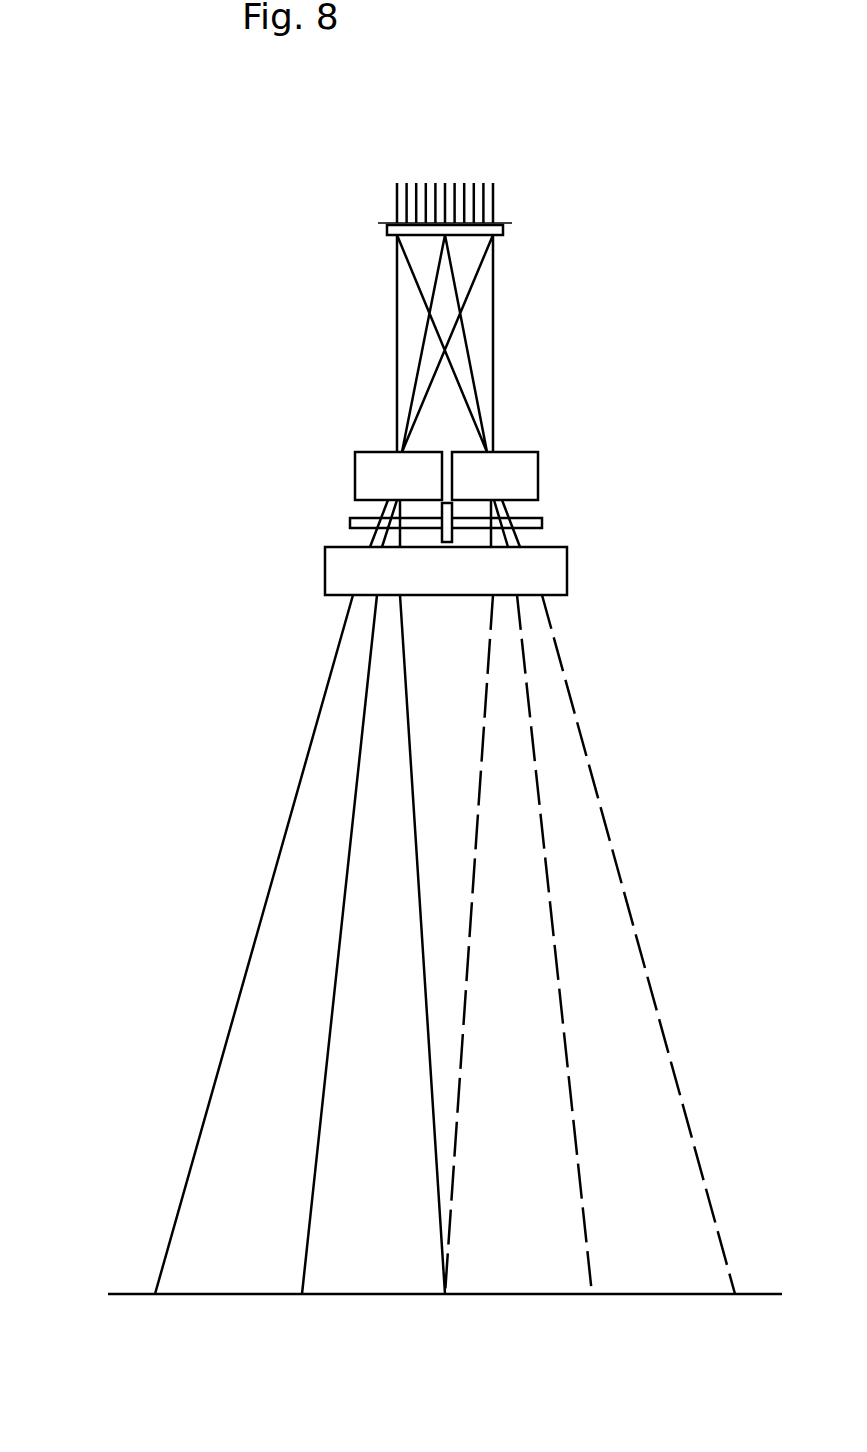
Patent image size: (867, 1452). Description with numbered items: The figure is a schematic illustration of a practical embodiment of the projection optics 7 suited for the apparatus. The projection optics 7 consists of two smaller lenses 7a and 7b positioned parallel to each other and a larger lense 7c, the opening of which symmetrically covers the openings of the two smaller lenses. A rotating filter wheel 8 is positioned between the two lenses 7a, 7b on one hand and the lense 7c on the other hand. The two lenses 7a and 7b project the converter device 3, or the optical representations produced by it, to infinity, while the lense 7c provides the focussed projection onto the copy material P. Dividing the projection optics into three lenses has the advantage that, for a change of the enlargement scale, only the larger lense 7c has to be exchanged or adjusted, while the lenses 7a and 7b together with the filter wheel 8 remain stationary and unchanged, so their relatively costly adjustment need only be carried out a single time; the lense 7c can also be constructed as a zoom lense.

The converter device 3 is at (484, 230).
The projection optics 7 is at (193, 445).
The smaller lense 7a is at (373, 473).
The smaller lense 7b is at (522, 472).
The larger lense 7c is at (340, 572).
The rotating filter wheel 8 is at (531, 524).
The copy material P is at (133, 1294).